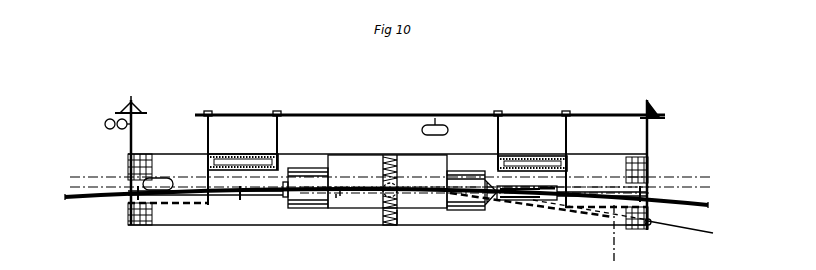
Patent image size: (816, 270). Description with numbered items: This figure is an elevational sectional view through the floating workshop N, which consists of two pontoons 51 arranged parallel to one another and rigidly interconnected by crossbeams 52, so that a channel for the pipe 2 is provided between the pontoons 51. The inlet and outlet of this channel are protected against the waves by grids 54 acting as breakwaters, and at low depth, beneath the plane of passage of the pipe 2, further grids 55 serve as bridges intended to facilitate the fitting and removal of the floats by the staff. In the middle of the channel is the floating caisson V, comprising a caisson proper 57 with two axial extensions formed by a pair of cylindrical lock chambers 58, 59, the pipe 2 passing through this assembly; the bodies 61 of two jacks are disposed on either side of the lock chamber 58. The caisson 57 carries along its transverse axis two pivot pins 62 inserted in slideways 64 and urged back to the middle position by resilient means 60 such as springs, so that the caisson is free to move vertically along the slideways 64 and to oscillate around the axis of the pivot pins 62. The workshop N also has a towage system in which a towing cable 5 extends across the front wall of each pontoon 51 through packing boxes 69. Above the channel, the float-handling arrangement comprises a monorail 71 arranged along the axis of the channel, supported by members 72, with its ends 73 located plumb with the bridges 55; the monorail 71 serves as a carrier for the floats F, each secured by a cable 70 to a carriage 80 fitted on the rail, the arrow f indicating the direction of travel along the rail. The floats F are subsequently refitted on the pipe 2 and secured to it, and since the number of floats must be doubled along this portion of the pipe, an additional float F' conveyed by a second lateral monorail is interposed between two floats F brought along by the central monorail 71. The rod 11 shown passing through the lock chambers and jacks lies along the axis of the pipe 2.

The pipe 2 is at (690, 201).
The towing cable 5 is at (702, 233).
The rod 11 is at (340, 189).
The pontoon 51 is at (528, 226).
The crossbeam 52 is at (525, 157).
The grid 54 is at (650, 166).
The grid 55 is at (590, 210).
The caisson proper 57 is at (367, 204).
The cylindrical lock chamber 58 is at (480, 208).
The cylindrical lock chamber 59 is at (290, 204).
The resilient means 60 is at (385, 226).
The jack body 61 is at (546, 201).
The pivot pin 62 is at (396, 185).
The slideway 64 is at (398, 226).
The packing box 69 is at (652, 222).
The cable 70 is at (445, 118).
The monorail 71 is at (340, 115).
The supporting member 72 is at (282, 140).
The monorail end 73 is at (665, 118).
The carriage 80 is at (435, 118).
The float F is at (163, 175).
The additional float F' is at (99, 126).
The direction f is at (563, 83).
The floating workshop N is at (223, 226).
The direction V is at (345, 200).